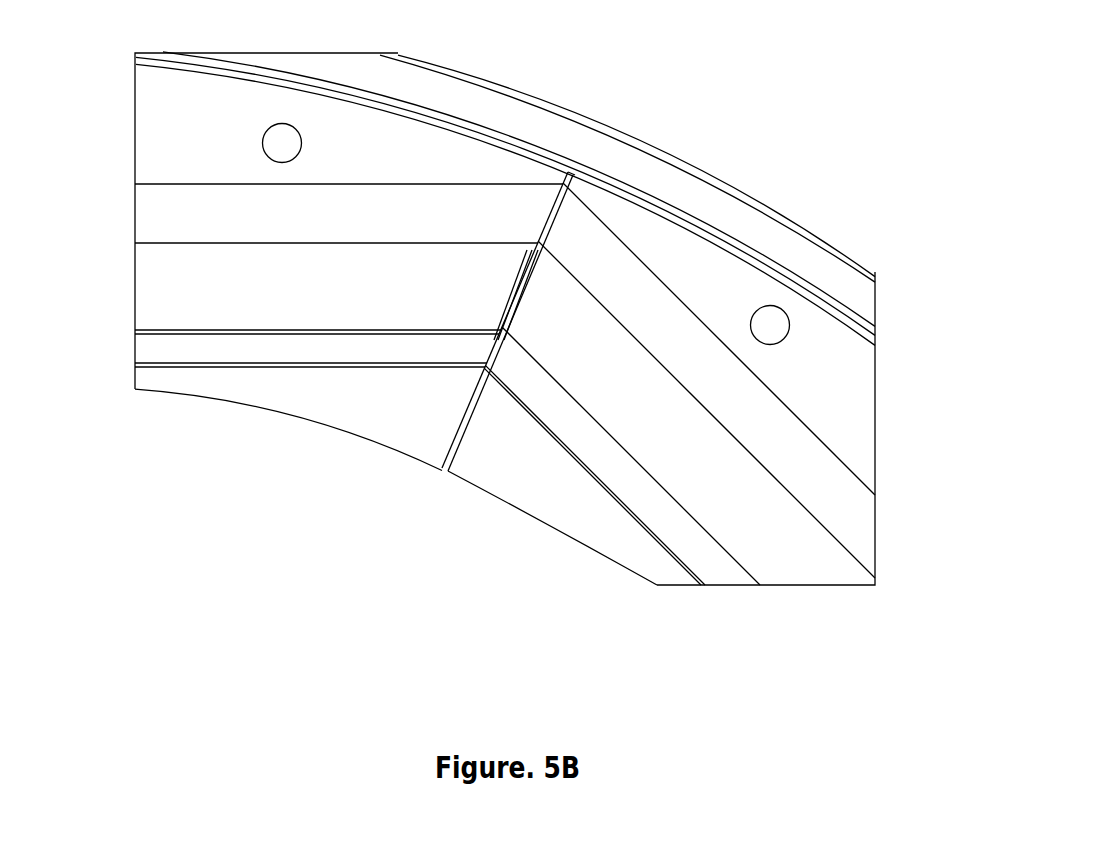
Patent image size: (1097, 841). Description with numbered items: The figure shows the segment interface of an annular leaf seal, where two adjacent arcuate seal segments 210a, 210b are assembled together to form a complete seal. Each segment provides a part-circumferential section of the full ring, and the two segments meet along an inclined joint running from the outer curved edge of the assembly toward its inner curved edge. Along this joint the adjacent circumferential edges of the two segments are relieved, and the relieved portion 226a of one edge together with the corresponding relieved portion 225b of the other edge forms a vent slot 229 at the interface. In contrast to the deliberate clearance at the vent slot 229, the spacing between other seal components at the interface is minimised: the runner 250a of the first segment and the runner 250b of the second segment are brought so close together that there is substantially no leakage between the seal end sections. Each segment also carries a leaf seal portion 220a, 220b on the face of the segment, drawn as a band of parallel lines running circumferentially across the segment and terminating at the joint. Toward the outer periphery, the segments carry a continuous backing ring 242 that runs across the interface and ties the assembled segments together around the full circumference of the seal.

The seal segment 210a is at (150, 121).
The seal segment 210b is at (860, 423).
The first flange 220a is at (150, 287).
The second flange 220b is at (802, 565).
The runner 250a is at (270, 400).
The runner 250b is at (551, 510).
The outer lip 242 is at (645, 143).
The rail 225b is at (526, 293).
The vent slot 229 is at (508, 300).
The tab 226a is at (521, 262).